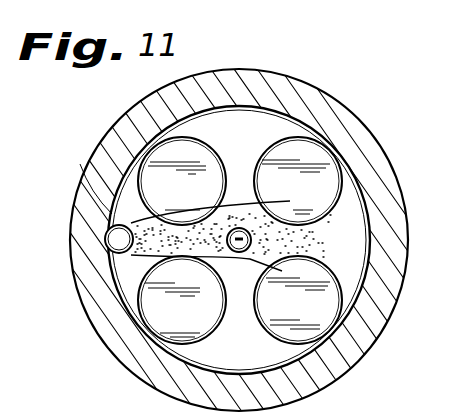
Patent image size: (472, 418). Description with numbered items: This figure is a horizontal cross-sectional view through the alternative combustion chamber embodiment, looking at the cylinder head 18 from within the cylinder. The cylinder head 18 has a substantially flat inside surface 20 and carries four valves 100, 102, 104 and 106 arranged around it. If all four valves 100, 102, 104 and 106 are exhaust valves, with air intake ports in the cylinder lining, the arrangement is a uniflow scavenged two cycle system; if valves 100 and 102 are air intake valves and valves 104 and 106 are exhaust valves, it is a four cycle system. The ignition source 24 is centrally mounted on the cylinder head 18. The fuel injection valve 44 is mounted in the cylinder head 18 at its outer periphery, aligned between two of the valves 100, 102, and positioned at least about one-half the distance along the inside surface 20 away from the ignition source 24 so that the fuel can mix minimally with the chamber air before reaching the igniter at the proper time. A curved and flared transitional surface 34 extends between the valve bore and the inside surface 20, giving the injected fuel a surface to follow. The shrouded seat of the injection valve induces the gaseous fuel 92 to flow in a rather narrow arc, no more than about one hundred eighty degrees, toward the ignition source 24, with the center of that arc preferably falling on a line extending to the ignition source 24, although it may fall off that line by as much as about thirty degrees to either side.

The cylinder head 18 is at (321, 100).
The inside surface 20 is at (253, 118).
The ignition source 24 is at (252, 242).
The transitional surface 34 is at (108, 207).
The valve 44 is at (106, 245).
The gaseous fuel 92 is at (252, 239).
The valve 100 is at (140, 152).
The valve 102 is at (170, 312).
The valve 104 is at (324, 163).
The valve 106 is at (319, 331).